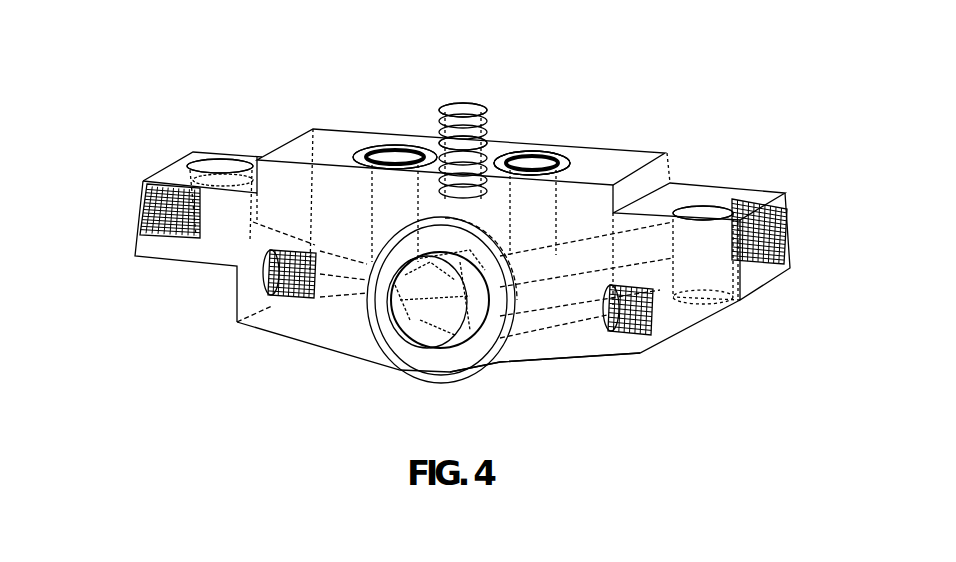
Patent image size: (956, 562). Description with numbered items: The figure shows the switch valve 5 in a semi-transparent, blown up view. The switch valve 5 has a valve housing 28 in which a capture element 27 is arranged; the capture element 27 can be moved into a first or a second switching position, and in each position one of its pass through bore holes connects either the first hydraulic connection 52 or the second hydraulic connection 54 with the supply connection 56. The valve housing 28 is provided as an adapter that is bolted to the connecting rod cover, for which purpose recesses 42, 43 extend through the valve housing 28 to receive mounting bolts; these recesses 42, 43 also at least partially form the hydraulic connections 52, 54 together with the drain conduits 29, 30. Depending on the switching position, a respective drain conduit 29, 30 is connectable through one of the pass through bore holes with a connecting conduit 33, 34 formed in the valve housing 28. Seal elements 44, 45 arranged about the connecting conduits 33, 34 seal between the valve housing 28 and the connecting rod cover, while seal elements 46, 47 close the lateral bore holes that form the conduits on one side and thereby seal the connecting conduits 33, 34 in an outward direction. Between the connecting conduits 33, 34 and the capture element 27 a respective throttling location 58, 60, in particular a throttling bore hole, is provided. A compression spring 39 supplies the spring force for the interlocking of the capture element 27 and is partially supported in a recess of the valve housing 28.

The switch valve 5 is at (158, 98).
The capture element 27 is at (430, 338).
The valve housing 28 is at (318, 328).
The drain conduit 29 is at (310, 130).
The drain conduit 30 is at (626, 164).
The connecting conduit 33 is at (395, 143).
The connecting conduit 34 is at (538, 150).
The compression spring 39 is at (465, 100).
The recess 42 is at (232, 159).
The recess 43 is at (702, 205).
The seal element 44 is at (372, 143).
The seal element 45 is at (562, 160).
The seal element 46 is at (236, 301).
The seal element 47 is at (140, 202).
The first hydraulic connection 52 is at (220, 166).
The second hydraulic connection 54 is at (703, 213).
The supply connection 56 is at (461, 160).
The throttling location 58 is at (513, 367).
The throttling location 60 is at (384, 357).